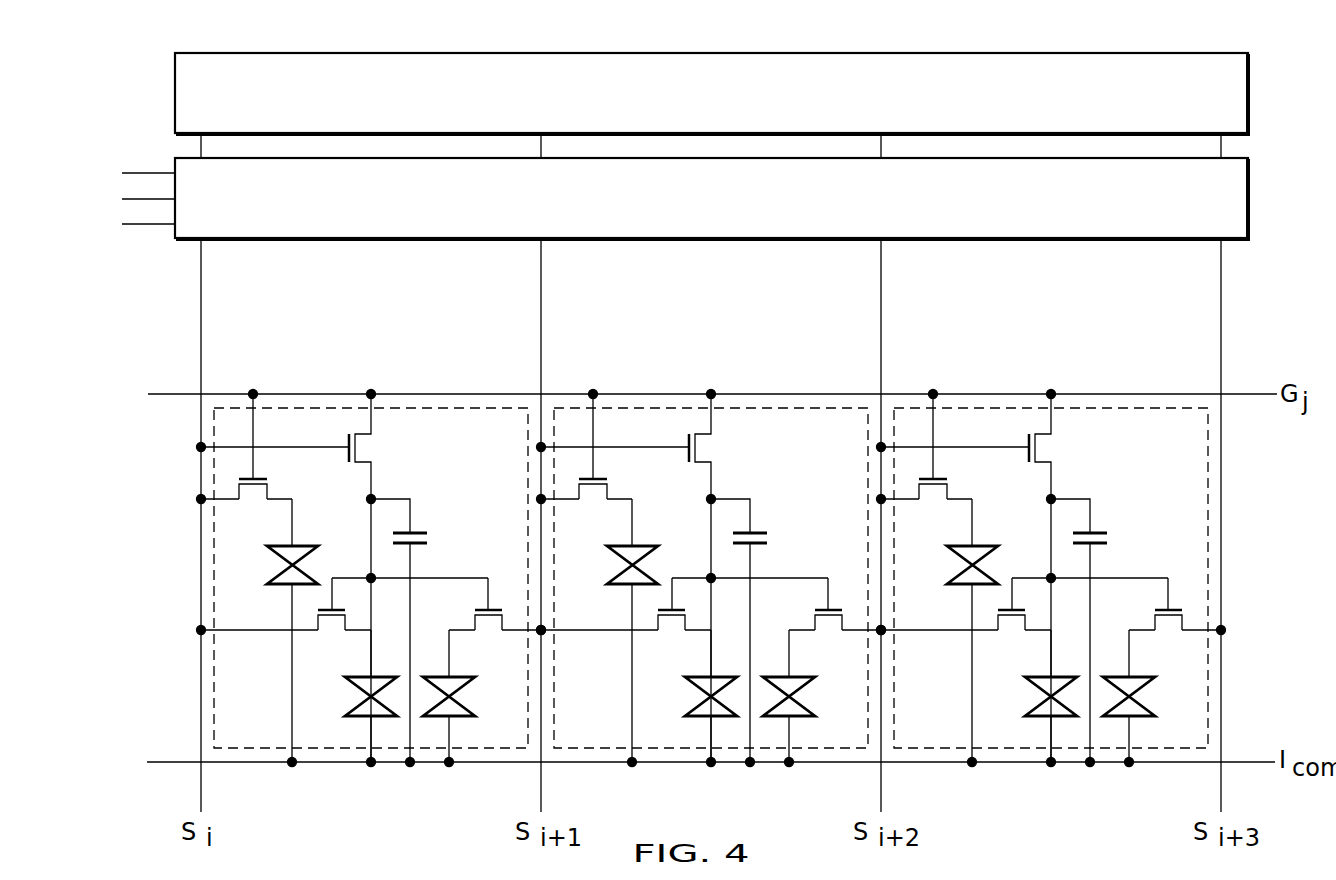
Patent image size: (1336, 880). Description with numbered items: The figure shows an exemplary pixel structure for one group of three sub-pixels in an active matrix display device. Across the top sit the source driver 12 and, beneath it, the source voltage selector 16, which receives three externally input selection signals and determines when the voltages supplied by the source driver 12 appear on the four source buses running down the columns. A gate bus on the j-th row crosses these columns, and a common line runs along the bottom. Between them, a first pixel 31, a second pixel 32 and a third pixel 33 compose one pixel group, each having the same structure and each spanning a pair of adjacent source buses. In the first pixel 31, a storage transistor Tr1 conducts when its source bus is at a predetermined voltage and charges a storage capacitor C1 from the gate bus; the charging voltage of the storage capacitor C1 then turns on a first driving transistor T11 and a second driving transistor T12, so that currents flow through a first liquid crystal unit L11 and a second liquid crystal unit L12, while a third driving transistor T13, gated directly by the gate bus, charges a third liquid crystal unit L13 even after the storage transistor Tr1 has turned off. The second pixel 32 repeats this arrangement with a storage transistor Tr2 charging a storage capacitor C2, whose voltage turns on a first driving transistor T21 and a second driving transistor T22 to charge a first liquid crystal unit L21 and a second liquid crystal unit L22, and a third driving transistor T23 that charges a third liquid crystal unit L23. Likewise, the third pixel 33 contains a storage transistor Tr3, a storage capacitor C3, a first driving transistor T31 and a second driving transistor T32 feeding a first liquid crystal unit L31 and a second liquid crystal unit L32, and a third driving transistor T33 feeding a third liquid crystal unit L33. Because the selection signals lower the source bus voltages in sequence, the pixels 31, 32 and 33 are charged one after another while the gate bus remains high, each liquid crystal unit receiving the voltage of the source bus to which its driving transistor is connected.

The source driver 12 is at (1248, 95).
The source voltage selector 16 is at (1248, 200).
The first pixel 31 is at (448, 408).
The second pixel 32 is at (711, 544).
The third pixel 33 is at (1051, 544).
The first driving transistor T11 is at (333, 633).
The second driving transistor T12 is at (489, 633).
The third driving transistor T13 is at (254, 500).
The storage transistor Tr1 is at (373, 447).
The storage capacitor C1 is at (430, 540).
The first liquid crystal unit L11 is at (360, 718).
The second liquid crystal unit L12 is at (465, 718).
The third liquid crystal unit L13 is at (280, 584).
The first driving transistor T21 is at (624, 644).
The second driving transistor T22 is at (837, 644).
The third driving transistor T23 is at (585, 470).
The storage transistor Tr2 is at (662, 578).
The storage capacitor C2 is at (769, 631).
The first liquid crystal unit L21 is at (691, 696).
The second liquid crystal unit L22 is at (817, 698).
The third liquid crystal unit L23 is at (608, 633).
The first driving transistor T31 is at (964, 644).
The second driving transistor T32 is at (1177, 644).
The third driving transistor T33 is at (925, 470).
The storage transistor Tr3 is at (1002, 578).
The storage capacitor C3 is at (1109, 631).
The first liquid crystal unit L31 is at (1031, 696).
The second liquid crystal unit L32 is at (1157, 698).
The third liquid crystal unit L33 is at (948, 633).